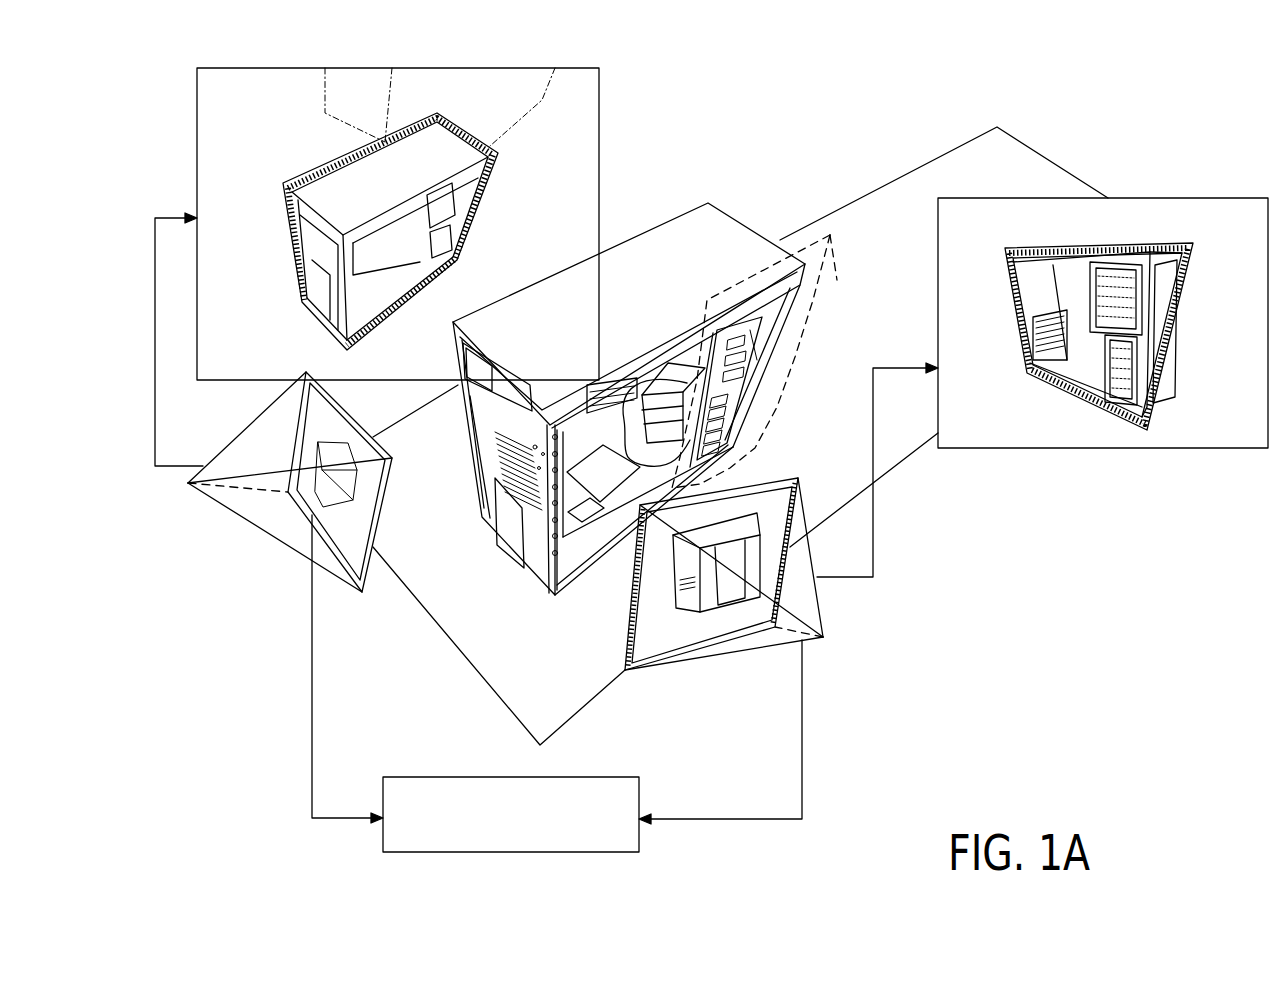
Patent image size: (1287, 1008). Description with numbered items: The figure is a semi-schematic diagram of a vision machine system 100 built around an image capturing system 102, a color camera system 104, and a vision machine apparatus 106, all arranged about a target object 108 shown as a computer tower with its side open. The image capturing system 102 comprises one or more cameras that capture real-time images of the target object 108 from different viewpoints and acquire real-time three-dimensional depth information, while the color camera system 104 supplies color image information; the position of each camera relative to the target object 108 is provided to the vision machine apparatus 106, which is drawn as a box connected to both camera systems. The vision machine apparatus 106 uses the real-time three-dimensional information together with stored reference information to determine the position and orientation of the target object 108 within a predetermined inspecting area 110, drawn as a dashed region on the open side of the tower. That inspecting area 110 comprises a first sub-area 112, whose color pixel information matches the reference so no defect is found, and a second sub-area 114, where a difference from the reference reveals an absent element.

The vision machine system 100 is at (246, 846).
The image capturing system 102 is at (258, 532).
The color camera system 104 is at (682, 667).
The vision machine apparatus 106 is at (458, 775).
The target object 108 is at (713, 397).
The predetermined inspecting area 110 is at (838, 284).
The first sub-area 112 is at (1118, 383).
The second sub-area 114 is at (1107, 270).